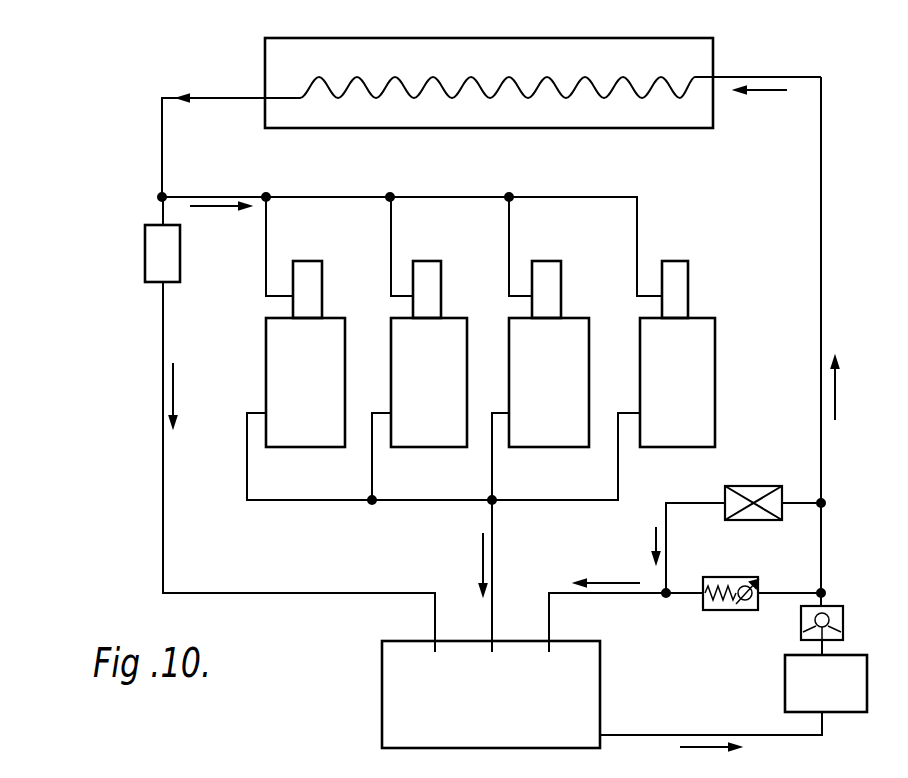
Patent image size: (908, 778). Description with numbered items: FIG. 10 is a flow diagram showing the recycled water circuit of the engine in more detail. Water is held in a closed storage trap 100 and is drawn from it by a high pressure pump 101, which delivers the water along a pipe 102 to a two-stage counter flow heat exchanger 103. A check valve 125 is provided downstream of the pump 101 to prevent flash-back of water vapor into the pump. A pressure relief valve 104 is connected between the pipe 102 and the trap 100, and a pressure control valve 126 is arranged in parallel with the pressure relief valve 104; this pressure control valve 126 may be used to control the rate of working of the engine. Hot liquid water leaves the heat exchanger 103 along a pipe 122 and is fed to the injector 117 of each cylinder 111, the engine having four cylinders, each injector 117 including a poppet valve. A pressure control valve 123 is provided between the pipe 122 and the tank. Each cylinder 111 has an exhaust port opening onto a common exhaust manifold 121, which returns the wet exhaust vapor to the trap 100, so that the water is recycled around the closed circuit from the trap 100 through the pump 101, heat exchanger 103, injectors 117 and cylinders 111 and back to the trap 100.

The closed storage trap 100 is at (382, 690).
The high pressure pump 101 is at (785, 692).
The pipe 102 is at (821, 183).
The two-stage counter flow heat exchanger 103 is at (712, 56).
The pressure relief valve 104 is at (713, 612).
The cylinder 111 is at (589, 353).
The injector 117 is at (556, 260).
The common exhaust manifold 121 is at (558, 500).
The pipe 122 is at (162, 172).
The pressure control valve 123 is at (180, 275).
The check valve 125 is at (803, 632).
The pressure control valve 126 is at (752, 486).